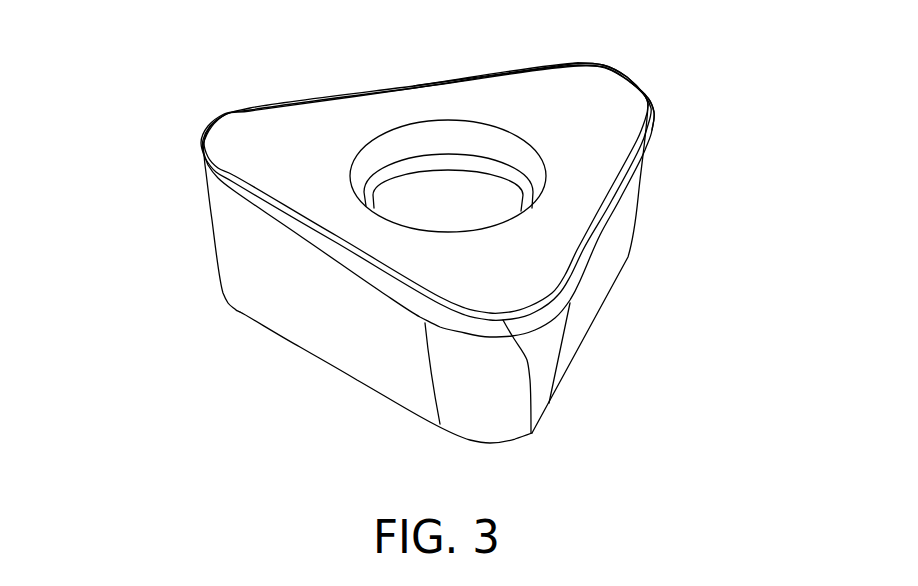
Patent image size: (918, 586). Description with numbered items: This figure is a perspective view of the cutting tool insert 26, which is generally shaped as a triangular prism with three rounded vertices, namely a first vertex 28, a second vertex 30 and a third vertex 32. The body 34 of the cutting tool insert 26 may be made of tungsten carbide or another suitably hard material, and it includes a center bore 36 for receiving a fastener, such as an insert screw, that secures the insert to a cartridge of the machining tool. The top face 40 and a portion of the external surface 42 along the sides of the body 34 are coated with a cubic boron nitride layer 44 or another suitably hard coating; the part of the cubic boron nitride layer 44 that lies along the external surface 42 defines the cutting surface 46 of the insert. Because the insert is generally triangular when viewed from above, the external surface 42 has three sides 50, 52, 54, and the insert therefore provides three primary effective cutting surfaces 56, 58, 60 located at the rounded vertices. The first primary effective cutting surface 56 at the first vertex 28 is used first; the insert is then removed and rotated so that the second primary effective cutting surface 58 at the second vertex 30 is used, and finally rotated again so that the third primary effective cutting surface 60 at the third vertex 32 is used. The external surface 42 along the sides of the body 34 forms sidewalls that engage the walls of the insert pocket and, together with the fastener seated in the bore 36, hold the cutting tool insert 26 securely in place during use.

The cutting tool insert 26 is at (138, 76).
The first vertex 28 is at (203, 143).
The second vertex 30 is at (630, 70).
The third vertex 32 is at (512, 443).
The body 34 is at (596, 288).
The center bore 36 is at (453, 190).
The top face 40 is at (331, 155).
The external surface 42 is at (308, 308).
The cubic boron nitride layer 44 is at (537, 107).
The cutting surface 46 is at (280, 218).
The first side 50 is at (384, 66).
The second side 52 is at (655, 257).
The third side 54 is at (296, 392).
The first primary effective cutting surface 56 is at (209, 124).
The second primary effective cutting surface 58 is at (650, 97).
The third primary effective cutting surface 60 is at (531, 435).